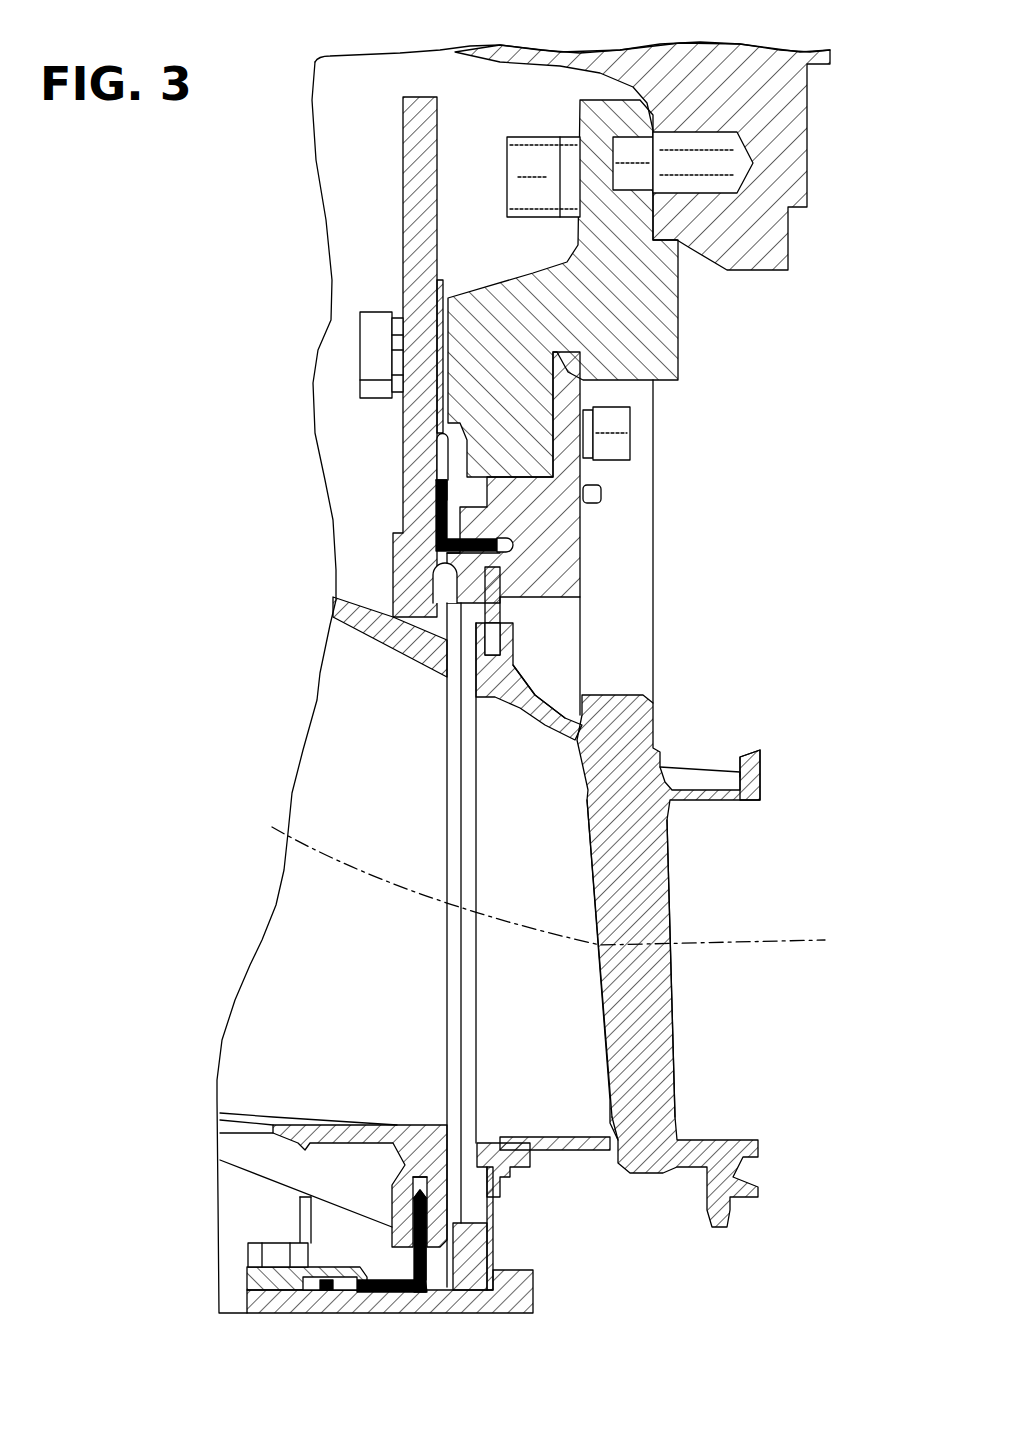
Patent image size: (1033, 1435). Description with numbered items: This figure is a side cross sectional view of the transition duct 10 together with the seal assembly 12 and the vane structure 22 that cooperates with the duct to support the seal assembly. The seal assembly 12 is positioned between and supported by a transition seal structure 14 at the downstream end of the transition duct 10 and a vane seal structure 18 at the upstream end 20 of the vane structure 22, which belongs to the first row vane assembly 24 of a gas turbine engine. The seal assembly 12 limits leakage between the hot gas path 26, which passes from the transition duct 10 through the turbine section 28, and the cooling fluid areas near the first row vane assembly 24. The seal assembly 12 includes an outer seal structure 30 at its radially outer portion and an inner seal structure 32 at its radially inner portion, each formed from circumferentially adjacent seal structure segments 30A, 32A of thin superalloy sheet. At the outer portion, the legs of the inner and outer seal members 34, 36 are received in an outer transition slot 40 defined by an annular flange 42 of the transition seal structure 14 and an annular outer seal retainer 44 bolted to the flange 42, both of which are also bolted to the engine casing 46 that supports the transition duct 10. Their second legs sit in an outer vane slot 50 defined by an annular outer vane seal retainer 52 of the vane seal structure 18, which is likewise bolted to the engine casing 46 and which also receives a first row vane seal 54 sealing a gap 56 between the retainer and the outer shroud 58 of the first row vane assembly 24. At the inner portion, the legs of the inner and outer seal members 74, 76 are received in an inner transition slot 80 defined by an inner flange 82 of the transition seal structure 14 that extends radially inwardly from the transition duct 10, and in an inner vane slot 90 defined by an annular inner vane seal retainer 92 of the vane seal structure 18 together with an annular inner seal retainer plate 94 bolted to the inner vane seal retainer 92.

The transition duct 10 is at (277, 973).
The seal assembly 12 is at (410, 655).
The transition seal structure 14 is at (388, 472).
The vane seal structure 18 is at (590, 567).
The upstream end 20 is at (500, 670).
The vane structure 22 is at (653, 910).
The first row vane assembly 24 is at (680, 1034).
The hot gas path 26 is at (763, 937).
The turbine section 28 is at (660, 1322).
The outer seal structure 30 is at (437, 519).
The seal structure segment 30A is at (437, 498).
The inner seal structure 32 is at (413, 1297).
The seal structure segment 32A is at (420, 1188).
The inner seal member 34 is at (440, 640).
The outer seal member 36 is at (590, 512).
The outer transition slot 40 is at (436, 456).
The annular flange 42 is at (420, 360).
The outer seal retainer 44 is at (437, 302).
The engine casing 46 is at (520, 285).
The outer vane slot 50 is at (490, 540).
The outer vane seal retainer 52 is at (515, 490).
The first row vane seal 54 is at (522, 547).
The gap 56 is at (513, 618).
The outer shroud 58 is at (498, 690).
The inner seal member 74 is at (347, 1290).
The outer seal member 76 is at (393, 1227).
The inner transition slot 80 is at (418, 1190).
The inner flange 82 is at (485, 1143).
The inner vane slot 90 is at (318, 1298).
The inner vane seal retainer 92 is at (260, 1317).
The inner seal retainer plate 94 is at (320, 1292).